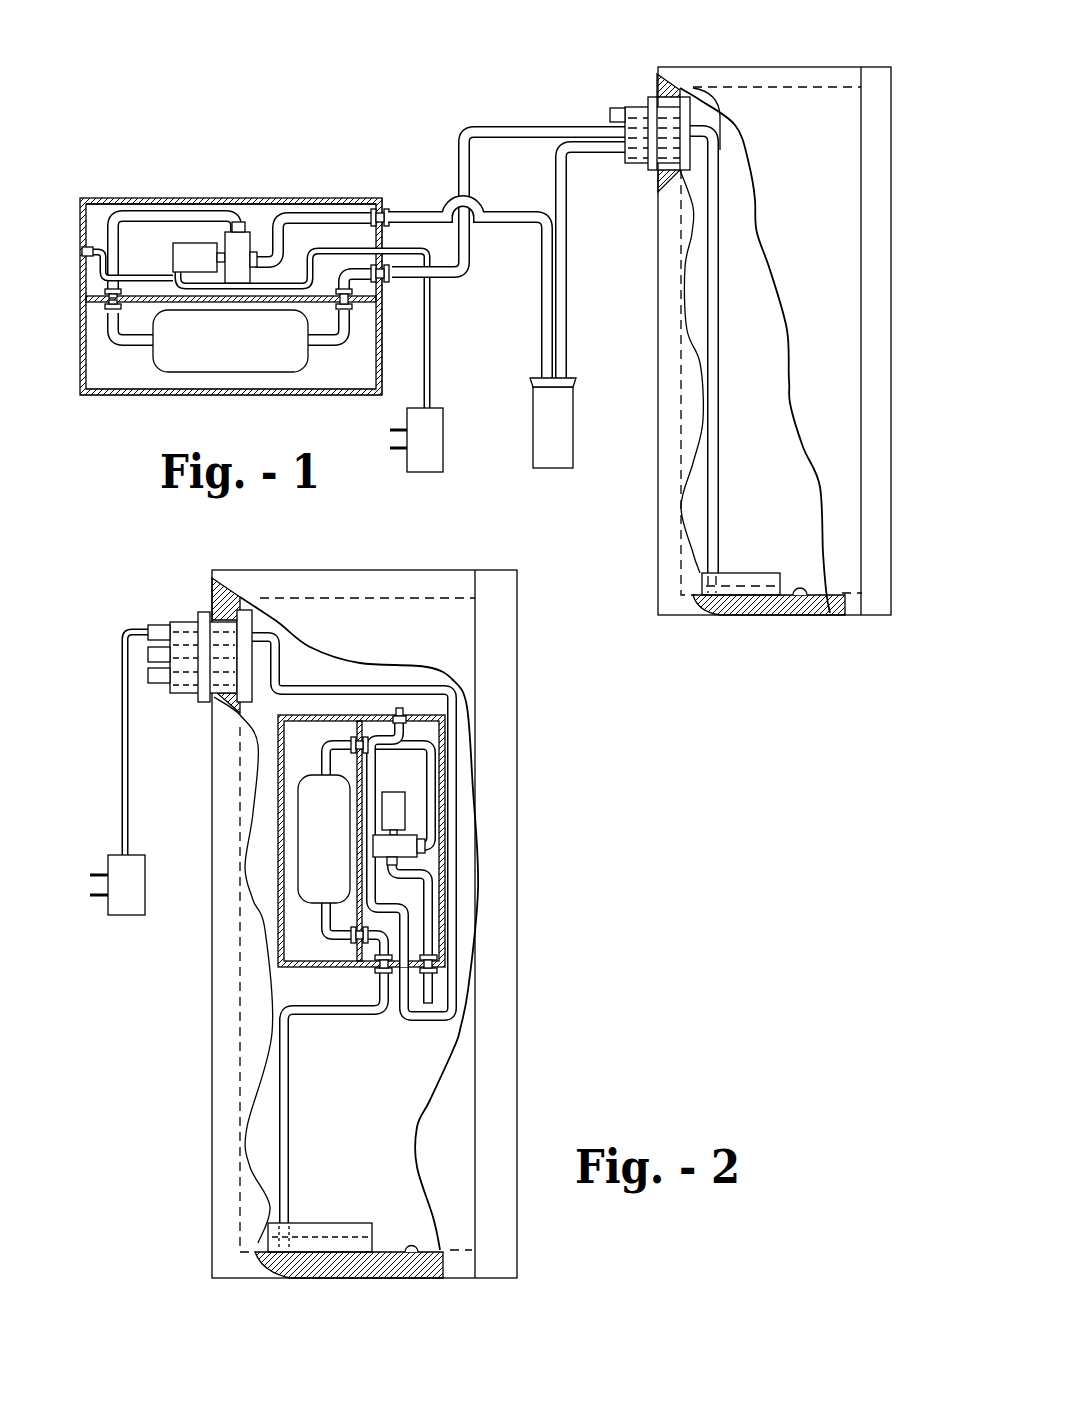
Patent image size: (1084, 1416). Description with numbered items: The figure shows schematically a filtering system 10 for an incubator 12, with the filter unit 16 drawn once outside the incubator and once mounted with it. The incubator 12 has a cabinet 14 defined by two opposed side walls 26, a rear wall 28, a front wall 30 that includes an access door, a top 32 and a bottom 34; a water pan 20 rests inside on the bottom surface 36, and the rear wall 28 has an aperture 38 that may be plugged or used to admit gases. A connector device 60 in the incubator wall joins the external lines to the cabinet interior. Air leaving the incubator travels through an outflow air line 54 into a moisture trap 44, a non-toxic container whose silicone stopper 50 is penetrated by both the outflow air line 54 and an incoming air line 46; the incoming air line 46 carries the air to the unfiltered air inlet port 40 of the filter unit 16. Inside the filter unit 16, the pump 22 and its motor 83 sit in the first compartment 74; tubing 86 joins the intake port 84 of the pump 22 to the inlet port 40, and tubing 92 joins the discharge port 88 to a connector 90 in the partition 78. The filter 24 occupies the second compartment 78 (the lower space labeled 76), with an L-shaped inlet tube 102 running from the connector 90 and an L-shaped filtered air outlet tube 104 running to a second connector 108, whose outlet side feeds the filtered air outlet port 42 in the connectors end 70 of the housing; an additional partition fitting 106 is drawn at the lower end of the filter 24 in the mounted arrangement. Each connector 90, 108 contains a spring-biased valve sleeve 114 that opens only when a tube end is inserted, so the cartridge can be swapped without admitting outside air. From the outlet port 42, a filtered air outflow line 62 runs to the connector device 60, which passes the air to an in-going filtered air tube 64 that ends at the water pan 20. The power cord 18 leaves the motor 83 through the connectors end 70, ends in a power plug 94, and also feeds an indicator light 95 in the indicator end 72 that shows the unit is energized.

In FIG. 1, the filtering system 10 is at (458, 100).
In FIG. 1, the incubator 12 is at (702, 58).
In FIG. 2, the incubator 12 is at (305, 568).
In FIG. 1, the cabinet 14 is at (820, 62).
In FIG. 2, the cabinet 14 is at (442, 623).
In FIG. 1, the filter unit 16 is at (110, 196).
In FIG. 2, the filter unit 16 is at (278, 952).
In FIG. 1, the power cord 18 is at (430, 343).
In FIG. 2, the power cord 18 is at (123, 695).
In FIG. 1, the water pan 20 is at (735, 585).
In FIG. 2, the water pan 20 is at (347, 1243).
In FIG. 1, the pump 22 is at (235, 248).
In FIG. 2, the pump 22 is at (398, 840).
In FIG. 1, the filter 24 is at (203, 343).
In FIG. 2, the filter 24 is at (318, 838).
In FIG. 1, the side walls 26 is at (693, 88).
In FIG. 2, the side walls 26 is at (263, 613).
In FIG. 1, the rear wall 28 is at (658, 77).
In FIG. 2, the rear wall 28 is at (220, 605).
In FIG. 1, the front wall 30 is at (883, 77).
In FIG. 2, the front wall 30 is at (502, 582).
In FIG. 1, the top 32 is at (775, 80).
In FIG. 2, the top 32 is at (380, 592).
In FIG. 1, the bottom 34 is at (783, 610).
In FIG. 2, the bottom 34 is at (395, 1272).
In FIG. 1, the bottom surface 36 is at (802, 593).
In FIG. 2, the bottom surface 36 is at (412, 1257).
In FIG. 1, the aperture 38 is at (658, 173).
In FIG. 2, the aperture 38 is at (217, 695).
In FIG. 1, the unfiltered air inlet port 40 is at (385, 210).
In FIG. 2, the unfiltered air inlet port 40 is at (435, 970).
In FIG. 1, the filtered air outlet port 42 is at (395, 277).
In FIG. 2, the filtered air outlet port 42 is at (377, 970).
In FIG. 1, the moisture trap 44 is at (560, 425).
In FIG. 1, the incoming air line 46 is at (542, 270).
In FIG. 1, the silicone stopper 50 is at (562, 382).
In FIG. 1, the outflow air line 54 is at (562, 273).
In FIG. 1, the connector device 60 is at (642, 163).
In FIG. 2, the connector device 60 is at (195, 622).
In FIG. 1, the filtered air outflow line 62 is at (462, 157).
In FIG. 1, the in-going filtered air tube 64 is at (713, 518).
In FIG. 2, the in-going filtered air tube 64 is at (283, 1160).
In FIG. 1, the connectors end 70 is at (382, 343).
In FIG. 1, the indicator end 72 is at (80, 392).
In FIG. 1, the first compartment 74 is at (103, 212).
In FIG. 1, the lower compartment 76 is at (115, 378).
In FIG. 1, the partition 78 is at (104, 296).
In FIG. 1, the motor 83 is at (195, 258).
In FIG. 2, the motor 83 is at (397, 812).
In FIG. 1, the intake port 84 is at (257, 248).
In FIG. 2, the intake port 84 is at (408, 863).
In FIG. 1, the tubing 86 is at (313, 220).
In FIG. 2, the tubing 86 is at (430, 917).
In FIG. 1, the discharge port 88 is at (240, 232).
In FIG. 2, the discharge port 88 is at (423, 845).
In FIG. 1, the connector 90 is at (108, 310).
In FIG. 1, the tubing 92 is at (118, 232).
In FIG. 2, the tubing 92 is at (427, 778).
In FIG. 1, the power plug 94 is at (433, 440).
In FIG. 2, the power plug 94 is at (123, 873).
In FIG. 1, the indicator light 95 is at (78, 247).
In FIG. 1, the inlet tube 102 is at (133, 342).
In FIG. 2, the inlet tube 102 is at (322, 767).
In FIG. 1, the filtered air outlet tube 104 is at (330, 340).
In FIG. 2, the partition fitting 106 is at (323, 920).
In FIG. 1, the connector 108 is at (357, 307).
In FIG. 2, the valve sleeve 114 is at (388, 940).